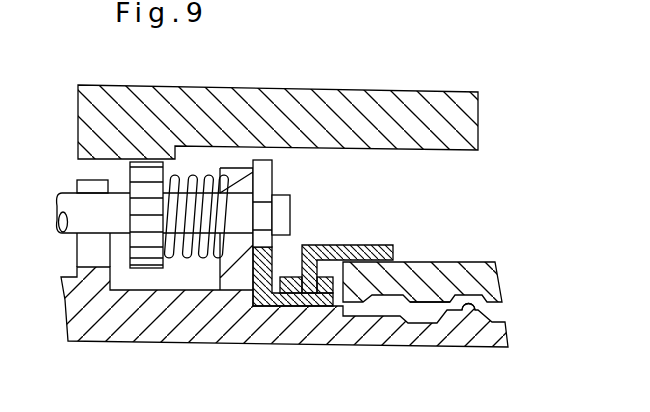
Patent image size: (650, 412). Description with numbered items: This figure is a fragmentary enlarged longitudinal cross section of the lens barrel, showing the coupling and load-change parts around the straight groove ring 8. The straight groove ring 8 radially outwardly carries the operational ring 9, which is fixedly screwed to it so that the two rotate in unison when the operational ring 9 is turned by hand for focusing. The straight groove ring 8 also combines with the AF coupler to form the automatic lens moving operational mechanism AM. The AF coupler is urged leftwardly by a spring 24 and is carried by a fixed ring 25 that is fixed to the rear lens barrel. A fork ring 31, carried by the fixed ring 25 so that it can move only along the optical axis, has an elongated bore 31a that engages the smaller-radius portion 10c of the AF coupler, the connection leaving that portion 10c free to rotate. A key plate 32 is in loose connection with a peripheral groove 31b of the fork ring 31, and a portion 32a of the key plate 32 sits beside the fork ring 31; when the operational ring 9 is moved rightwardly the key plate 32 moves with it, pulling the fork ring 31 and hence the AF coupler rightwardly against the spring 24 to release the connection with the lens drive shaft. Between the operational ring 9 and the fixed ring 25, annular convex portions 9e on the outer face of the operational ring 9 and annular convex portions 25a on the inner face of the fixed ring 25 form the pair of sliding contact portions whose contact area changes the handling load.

The straight groove ring 8 is at (447, 145).
The operational ring 9 is at (458, 263).
The annular convex portions 9e is at (427, 304).
The portion of the AF coupler 10c is at (267, 215).
The spring 24 is at (203, 258).
The fixed ring 25 is at (100, 338).
The annular convex portions 25a is at (471, 306).
The fork ring 31 is at (282, 297).
The elongated bore 31a is at (262, 170).
The peripheral groove 31b is at (291, 277).
The key plate 32 is at (383, 245).
The foot portion 32a is at (308, 297).
The automatic lens moving operational mechanism AM is at (145, 272).